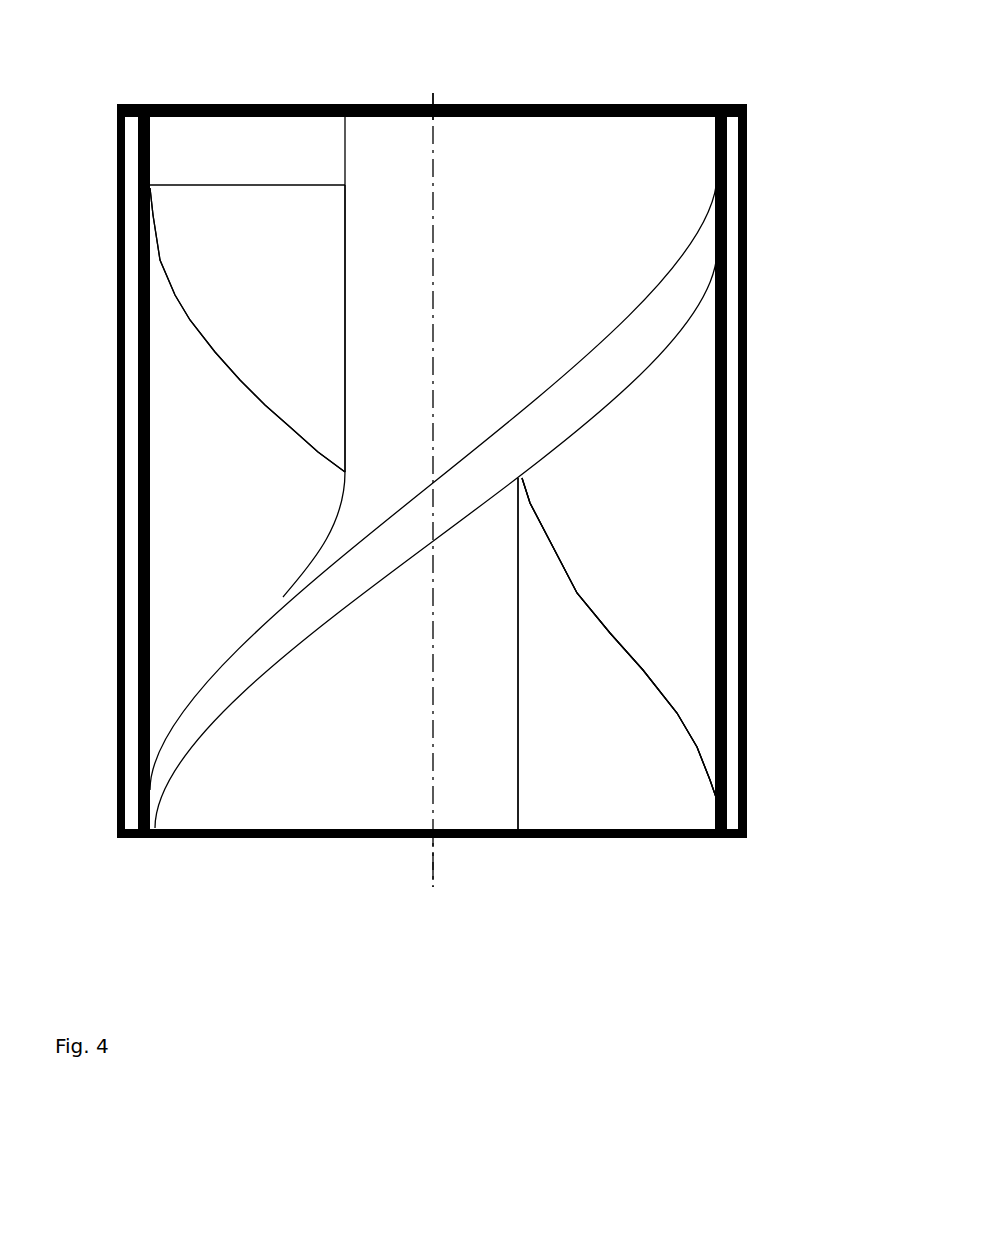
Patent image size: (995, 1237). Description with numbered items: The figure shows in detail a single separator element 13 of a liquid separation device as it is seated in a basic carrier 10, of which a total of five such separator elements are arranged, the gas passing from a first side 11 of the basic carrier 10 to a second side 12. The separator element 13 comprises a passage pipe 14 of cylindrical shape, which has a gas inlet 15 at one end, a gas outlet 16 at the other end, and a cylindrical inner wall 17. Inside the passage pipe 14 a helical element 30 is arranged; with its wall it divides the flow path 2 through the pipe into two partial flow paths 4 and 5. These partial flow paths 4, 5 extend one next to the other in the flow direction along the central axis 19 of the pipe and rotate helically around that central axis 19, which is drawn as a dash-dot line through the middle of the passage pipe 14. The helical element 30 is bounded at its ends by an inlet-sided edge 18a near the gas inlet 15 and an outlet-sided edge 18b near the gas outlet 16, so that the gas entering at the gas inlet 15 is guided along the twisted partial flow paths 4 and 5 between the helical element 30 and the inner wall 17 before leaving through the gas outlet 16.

The flow path 2 is at (433, 522).
The partial flow path 4 is at (600, 545).
The partial flow path 5 is at (227, 553).
The basic carrier 10 is at (730, 453).
The first side 11 is at (648, 836).
The second side 12 is at (653, 105).
The separator element 13 is at (723, 647).
The passage pipe 14 is at (688, 377).
The gas inlet 15 is at (283, 836).
The gas outlet 16 is at (537, 105).
The inner wall 17 is at (150, 487).
The inlet-sided edge 18a is at (367, 836).
The outlet-sided edge 18b is at (468, 105).
The central axis 19 is at (436, 272).
The helical element 30 is at (560, 415).